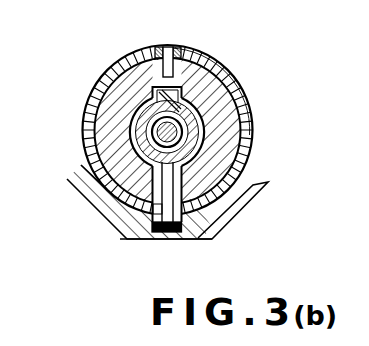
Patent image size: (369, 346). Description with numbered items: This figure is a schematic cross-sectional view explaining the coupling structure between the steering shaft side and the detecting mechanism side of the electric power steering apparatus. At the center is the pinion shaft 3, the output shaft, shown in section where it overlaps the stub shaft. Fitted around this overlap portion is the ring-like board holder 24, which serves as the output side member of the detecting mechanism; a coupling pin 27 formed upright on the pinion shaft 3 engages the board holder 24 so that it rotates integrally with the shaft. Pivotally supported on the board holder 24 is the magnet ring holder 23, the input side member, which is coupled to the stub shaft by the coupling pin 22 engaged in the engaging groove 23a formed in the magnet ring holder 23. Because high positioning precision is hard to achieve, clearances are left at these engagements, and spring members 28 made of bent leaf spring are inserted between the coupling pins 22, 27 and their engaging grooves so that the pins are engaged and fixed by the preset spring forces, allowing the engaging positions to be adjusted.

The pinion shaft 3 is at (215, 107).
The coupling pin 22 is at (237, 157).
The magnet ring holder 23 is at (203, 226).
The engaging groove 23a is at (127, 239).
The board holder 24 is at (88, 105).
The coupling pin 27 is at (156, 51).
The spring member 28 is at (158, 48).